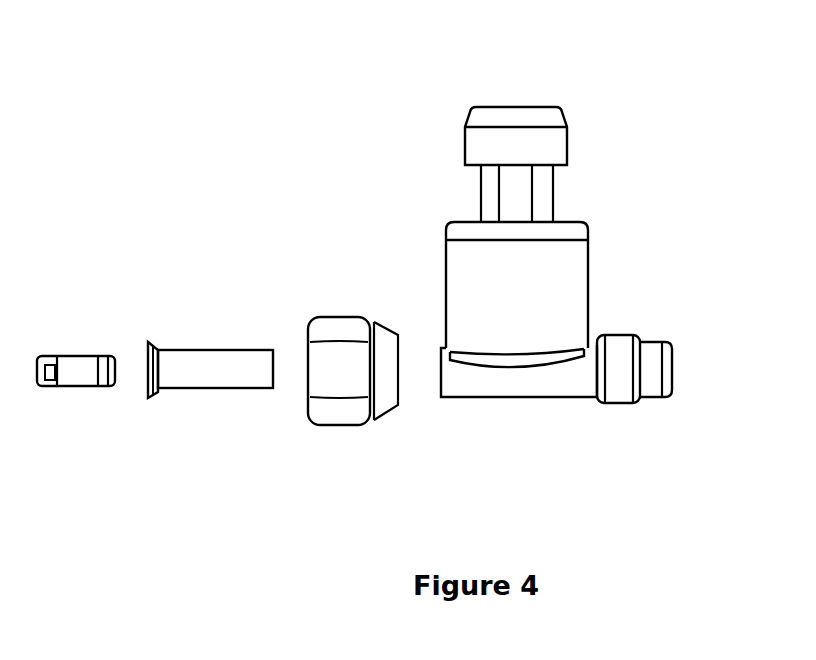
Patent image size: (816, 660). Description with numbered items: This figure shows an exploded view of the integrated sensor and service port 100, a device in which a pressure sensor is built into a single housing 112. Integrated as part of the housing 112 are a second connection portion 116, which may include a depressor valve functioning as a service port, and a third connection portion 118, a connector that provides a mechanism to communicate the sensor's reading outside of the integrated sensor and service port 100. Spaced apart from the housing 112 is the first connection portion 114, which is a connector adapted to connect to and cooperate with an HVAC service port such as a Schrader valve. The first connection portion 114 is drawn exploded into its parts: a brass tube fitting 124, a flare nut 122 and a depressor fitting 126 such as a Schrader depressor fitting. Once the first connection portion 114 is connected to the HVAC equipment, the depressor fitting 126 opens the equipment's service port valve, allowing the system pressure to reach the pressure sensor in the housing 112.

The integrated sensor and service port 100 is at (245, 205).
The housing 112 is at (472, 283).
The first connection portion 114 is at (255, 466).
The second connection portion 116 is at (672, 367).
The third connection portion 118 is at (552, 105).
The flare nut 122 is at (357, 425).
The brass tube fitting 124 is at (198, 352).
The depressor fitting 126 is at (85, 360).